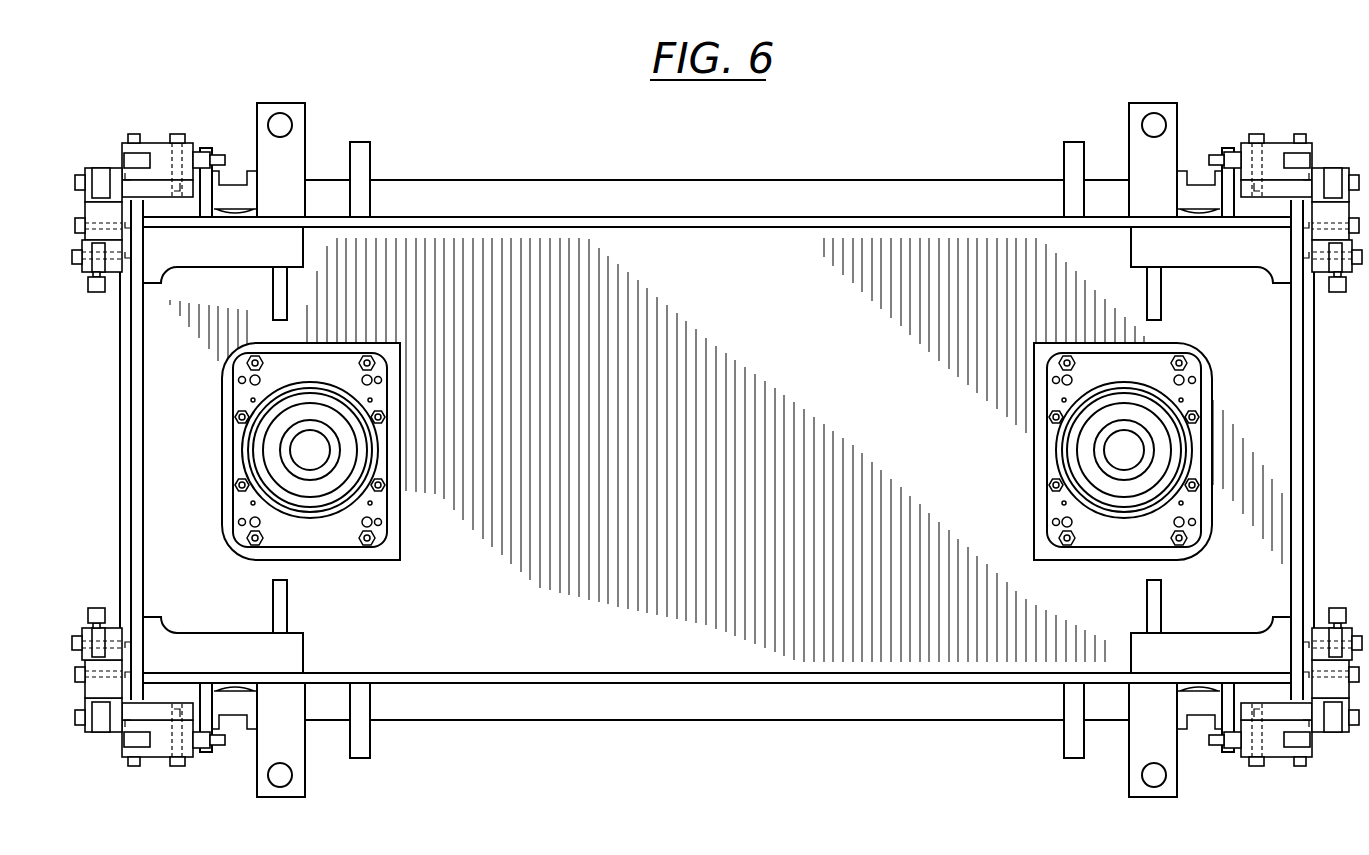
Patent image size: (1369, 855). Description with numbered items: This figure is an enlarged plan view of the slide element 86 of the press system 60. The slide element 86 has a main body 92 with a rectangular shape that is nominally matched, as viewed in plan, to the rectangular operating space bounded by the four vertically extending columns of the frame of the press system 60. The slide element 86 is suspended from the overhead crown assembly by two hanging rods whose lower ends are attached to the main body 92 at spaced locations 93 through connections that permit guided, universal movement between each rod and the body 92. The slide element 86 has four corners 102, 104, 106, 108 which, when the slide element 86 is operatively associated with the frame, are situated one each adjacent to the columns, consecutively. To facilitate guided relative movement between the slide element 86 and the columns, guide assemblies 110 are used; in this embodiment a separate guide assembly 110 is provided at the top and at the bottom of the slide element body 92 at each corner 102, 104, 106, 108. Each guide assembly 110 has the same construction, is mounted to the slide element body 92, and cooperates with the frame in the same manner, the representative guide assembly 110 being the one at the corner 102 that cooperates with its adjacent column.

The press system 60 is at (1335, 500).
The slide element 86 is at (915, 386).
The main body 92 is at (1228, 375).
The spaced locations 93 is at (322, 400).
The corner 102 is at (128, 720).
The corner 104 is at (1310, 717).
The corner 106 is at (128, 180).
The corner 108 is at (1284, 187).
The guide assembly 110 is at (76, 222).